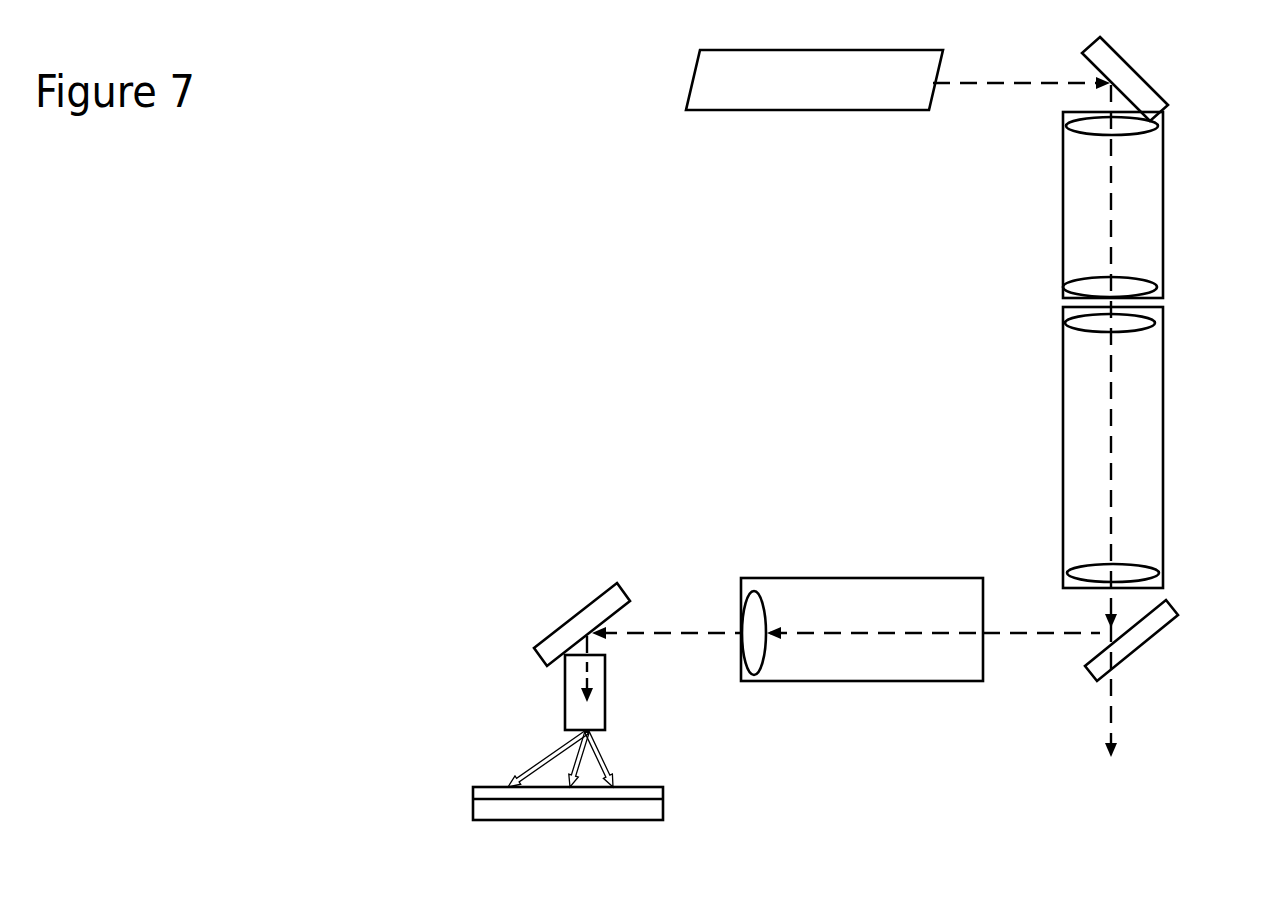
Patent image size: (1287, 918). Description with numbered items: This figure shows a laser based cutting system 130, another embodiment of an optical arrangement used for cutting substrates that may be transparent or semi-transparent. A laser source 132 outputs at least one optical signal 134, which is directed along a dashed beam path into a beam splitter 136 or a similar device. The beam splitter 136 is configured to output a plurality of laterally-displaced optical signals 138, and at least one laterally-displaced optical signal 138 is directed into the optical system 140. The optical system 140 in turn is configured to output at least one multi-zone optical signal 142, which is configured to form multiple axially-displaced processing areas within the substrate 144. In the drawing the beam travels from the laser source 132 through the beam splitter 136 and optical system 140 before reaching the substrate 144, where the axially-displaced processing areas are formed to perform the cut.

The laser based cutting system 130 is at (1045, 192).
The laser source 132 is at (873, 108).
The optical signal 134 is at (1047, 82).
The beam splitter 136 is at (1178, 602).
The laterally-displaced optical signal 138 is at (1050, 634).
The optical system 140 is at (911, 578).
The multi-zone optical signal 142 is at (762, 588).
The substrate 144 is at (554, 788).